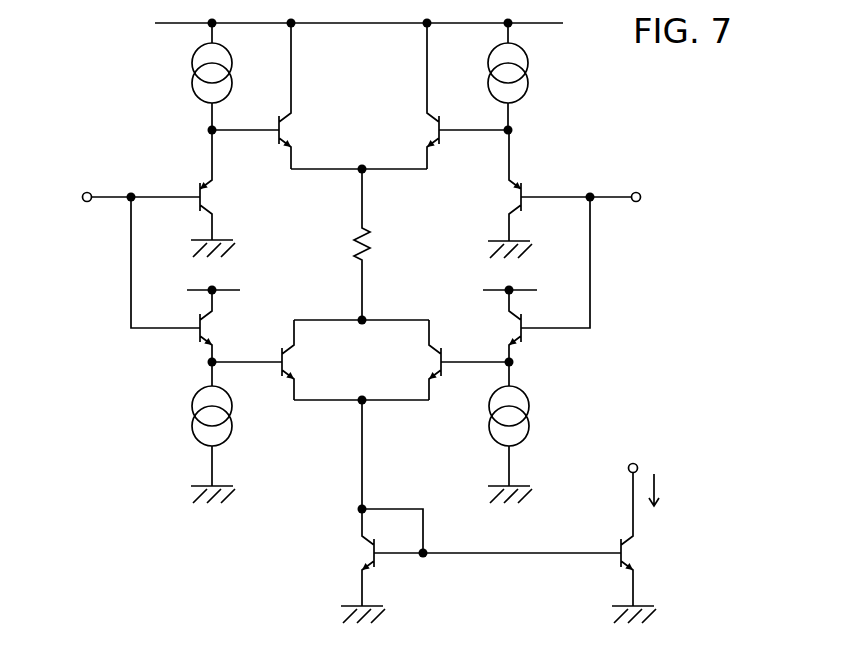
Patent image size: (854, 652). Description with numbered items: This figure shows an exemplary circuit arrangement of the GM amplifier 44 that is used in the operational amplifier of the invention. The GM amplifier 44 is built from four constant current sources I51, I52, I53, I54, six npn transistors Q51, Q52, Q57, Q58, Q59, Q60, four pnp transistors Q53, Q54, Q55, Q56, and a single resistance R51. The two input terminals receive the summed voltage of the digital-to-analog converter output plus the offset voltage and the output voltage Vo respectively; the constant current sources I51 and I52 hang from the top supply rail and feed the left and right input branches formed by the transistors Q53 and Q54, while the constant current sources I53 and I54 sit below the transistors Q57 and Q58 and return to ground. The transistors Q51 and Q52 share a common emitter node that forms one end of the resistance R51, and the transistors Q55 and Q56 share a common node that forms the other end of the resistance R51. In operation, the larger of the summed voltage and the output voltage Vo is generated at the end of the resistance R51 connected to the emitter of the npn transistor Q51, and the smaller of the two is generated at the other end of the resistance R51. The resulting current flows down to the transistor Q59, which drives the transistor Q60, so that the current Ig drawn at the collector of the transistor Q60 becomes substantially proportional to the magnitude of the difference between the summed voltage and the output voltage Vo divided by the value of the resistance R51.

The GM amplifier 44 is at (96, 32).
The npn transistor Q51 is at (273, 96).
The npn transistor Q52 is at (445, 96).
The pnp transistor Q53 is at (223, 194).
The pnp transistor Q54 is at (497, 194).
The pnp transistor Q55 is at (275, 360).
The pnp transistor Q56 is at (447, 360).
The npn transistor Q57 is at (228, 326).
The npn transistor Q58 is at (492, 326).
The npn transistor Q59 is at (366, 566).
The npn transistor Q60 is at (550, 547).
The resistance R51 is at (385, 244).
The constant current source I51 is at (192, 77).
The constant current source I52 is at (488, 77).
The constant current source I53 is at (196, 432).
The constant current source I54 is at (530, 432).